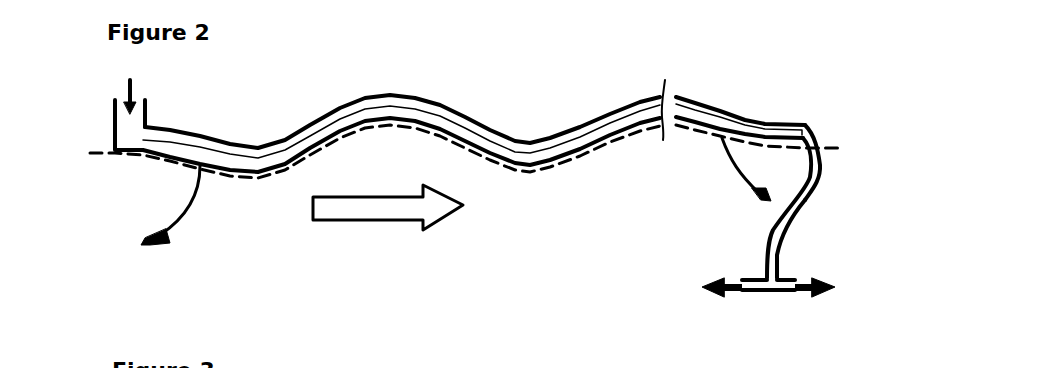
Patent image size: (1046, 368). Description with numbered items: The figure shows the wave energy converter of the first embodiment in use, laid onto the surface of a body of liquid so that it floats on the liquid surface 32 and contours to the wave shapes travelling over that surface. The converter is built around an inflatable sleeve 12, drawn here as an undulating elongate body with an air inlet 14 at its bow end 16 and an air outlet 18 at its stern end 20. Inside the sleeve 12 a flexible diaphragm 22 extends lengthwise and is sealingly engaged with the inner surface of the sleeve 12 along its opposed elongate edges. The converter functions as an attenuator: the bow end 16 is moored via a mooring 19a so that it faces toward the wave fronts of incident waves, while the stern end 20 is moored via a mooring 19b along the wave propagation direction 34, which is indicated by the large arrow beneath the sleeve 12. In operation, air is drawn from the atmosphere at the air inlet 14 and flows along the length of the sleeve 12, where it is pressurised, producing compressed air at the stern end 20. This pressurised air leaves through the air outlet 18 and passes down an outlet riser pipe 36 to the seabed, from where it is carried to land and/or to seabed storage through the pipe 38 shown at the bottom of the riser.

The inflatable sleeve 12 is at (372, 98).
The air inlet 14 is at (133, 88).
The bow end 16 is at (147, 158).
The air outlet 18 is at (805, 193).
The mooring 19a is at (172, 227).
The mooring 19b is at (730, 160).
The stern end 20 is at (780, 123).
The flexible diaphragm 22 is at (207, 148).
The liquid surface 32 is at (263, 177).
The wave propagation direction 34 is at (372, 202).
The outlet riser pipe 36 is at (752, 252).
The pipe 38 is at (752, 293).